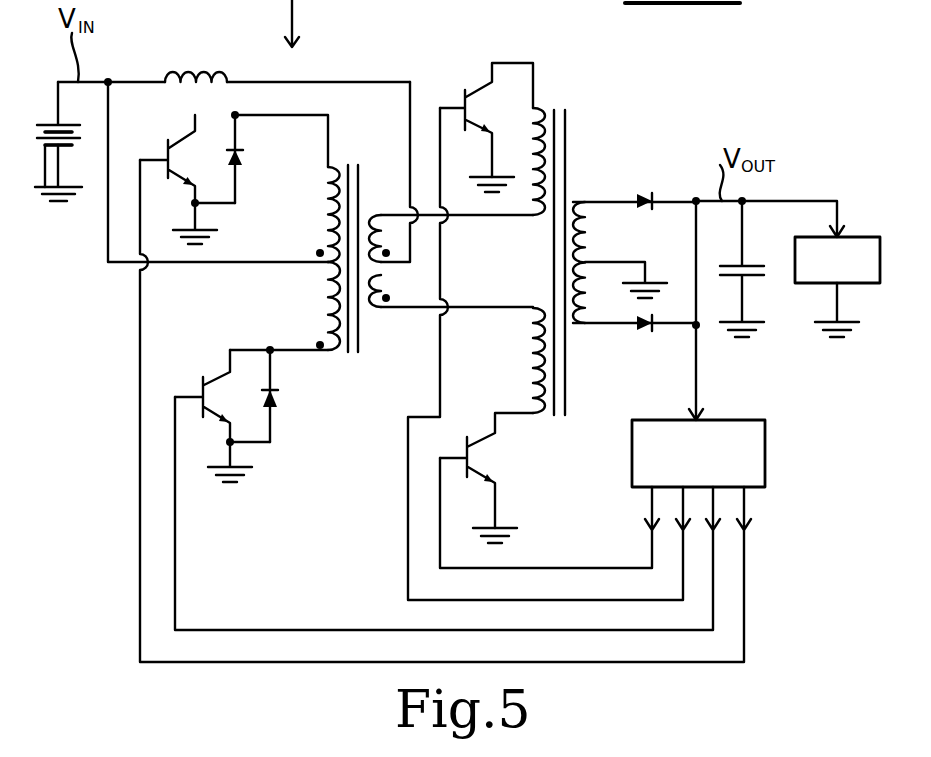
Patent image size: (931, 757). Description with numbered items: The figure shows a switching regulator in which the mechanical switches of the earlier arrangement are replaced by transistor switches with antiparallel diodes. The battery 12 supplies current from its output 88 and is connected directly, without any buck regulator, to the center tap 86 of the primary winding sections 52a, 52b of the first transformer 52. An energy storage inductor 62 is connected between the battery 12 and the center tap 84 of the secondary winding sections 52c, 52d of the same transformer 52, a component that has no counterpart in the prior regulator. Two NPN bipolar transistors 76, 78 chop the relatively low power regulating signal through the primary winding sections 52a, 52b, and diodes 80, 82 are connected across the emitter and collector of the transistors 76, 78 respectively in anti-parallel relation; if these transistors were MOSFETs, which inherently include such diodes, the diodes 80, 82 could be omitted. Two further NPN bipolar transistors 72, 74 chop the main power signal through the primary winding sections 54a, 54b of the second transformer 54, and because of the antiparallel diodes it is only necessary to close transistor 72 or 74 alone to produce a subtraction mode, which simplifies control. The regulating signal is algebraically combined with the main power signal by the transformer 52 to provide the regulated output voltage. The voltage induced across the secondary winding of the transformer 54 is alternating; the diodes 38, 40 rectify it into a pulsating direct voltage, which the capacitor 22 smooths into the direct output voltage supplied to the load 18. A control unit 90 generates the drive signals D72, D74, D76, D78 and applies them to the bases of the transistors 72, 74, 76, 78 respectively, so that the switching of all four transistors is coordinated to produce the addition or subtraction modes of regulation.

The battery 12 is at (50, 123).
The battery output 88 is at (96, 82).
The energy storage inductor 62 is at (195, 70).
The NPN bipolar transistor 76 is at (168, 143).
The diode 80 is at (243, 155).
The center tap of the primary winding 86 is at (220, 262).
The first transformer 52 is at (363, 372).
The primary winding section 52a is at (328, 226).
The primary winding section 52b is at (328, 322).
The secondary winding section 52c is at (383, 215).
The secondary winding section 52d is at (381, 277).
The center tap of the secondary winding 84 is at (412, 253).
The NPN bipolar transistor 78 is at (203, 382).
The diode 82 is at (277, 397).
The NPN bipolar transistor 72 is at (465, 90).
The NPN bipolar transistor 74 is at (488, 440).
The transformer 54 is at (565, 88).
The primary winding section 54a is at (531, 197).
The primary winding section 54b is at (533, 356).
The diode 38 is at (642, 200).
The diode 40 is at (641, 325).
The capacitor 22 is at (758, 280).
The load 18 is at (862, 237).
The control unit 90 is at (765, 457).
The drive signal D72 is at (408, 535).
The drive signal D74 is at (438, 501).
The drive signal D76 is at (258, 662).
The drive signal D78 is at (348, 630).